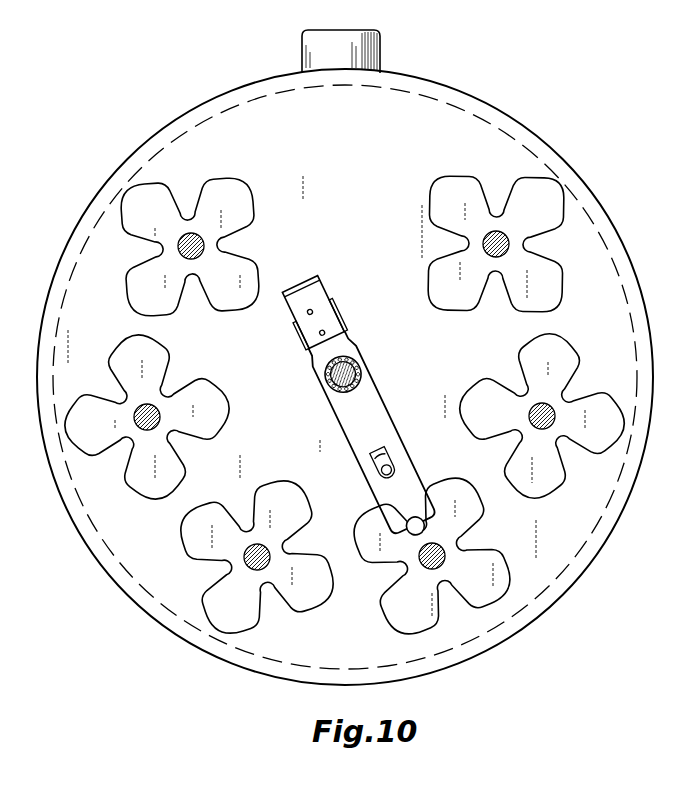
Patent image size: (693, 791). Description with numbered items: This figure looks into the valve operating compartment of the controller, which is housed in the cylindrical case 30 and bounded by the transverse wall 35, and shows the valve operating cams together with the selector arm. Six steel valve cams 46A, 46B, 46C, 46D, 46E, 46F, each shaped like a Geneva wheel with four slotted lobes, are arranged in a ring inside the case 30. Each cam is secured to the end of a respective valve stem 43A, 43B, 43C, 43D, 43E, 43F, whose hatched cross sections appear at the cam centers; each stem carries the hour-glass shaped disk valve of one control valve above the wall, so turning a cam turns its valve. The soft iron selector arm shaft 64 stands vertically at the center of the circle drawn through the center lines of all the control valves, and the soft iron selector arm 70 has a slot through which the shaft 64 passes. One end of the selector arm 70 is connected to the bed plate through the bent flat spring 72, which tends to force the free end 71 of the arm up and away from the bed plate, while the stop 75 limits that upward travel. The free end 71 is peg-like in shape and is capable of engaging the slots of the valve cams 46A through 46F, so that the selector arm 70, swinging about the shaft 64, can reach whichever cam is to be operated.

The cylindrical case 30 is at (655, 354).
The transverse wall 35 is at (378, 204).
The valve cam 46A is at (250, 200).
The valve cam 46B is at (214, 418).
The valve cam 46C is at (298, 511).
The valve cam 46D is at (488, 548).
The valve cam 46E is at (568, 341).
The valve cam 46F is at (545, 237).
The valve stem 43A is at (205, 245).
The valve stem 43B is at (156, 405).
The valve stem 43C is at (265, 543).
The valve stem 43D is at (445, 559).
The valve stem 43E is at (552, 429).
The valve stem 43F is at (496, 257).
The bent flat spring 72 is at (313, 303).
The selector arm 70 is at (376, 418).
The selector arm shaft 64 is at (352, 371).
The stop 75 is at (391, 451).
The free end of selector arm 71 is at (409, 532).